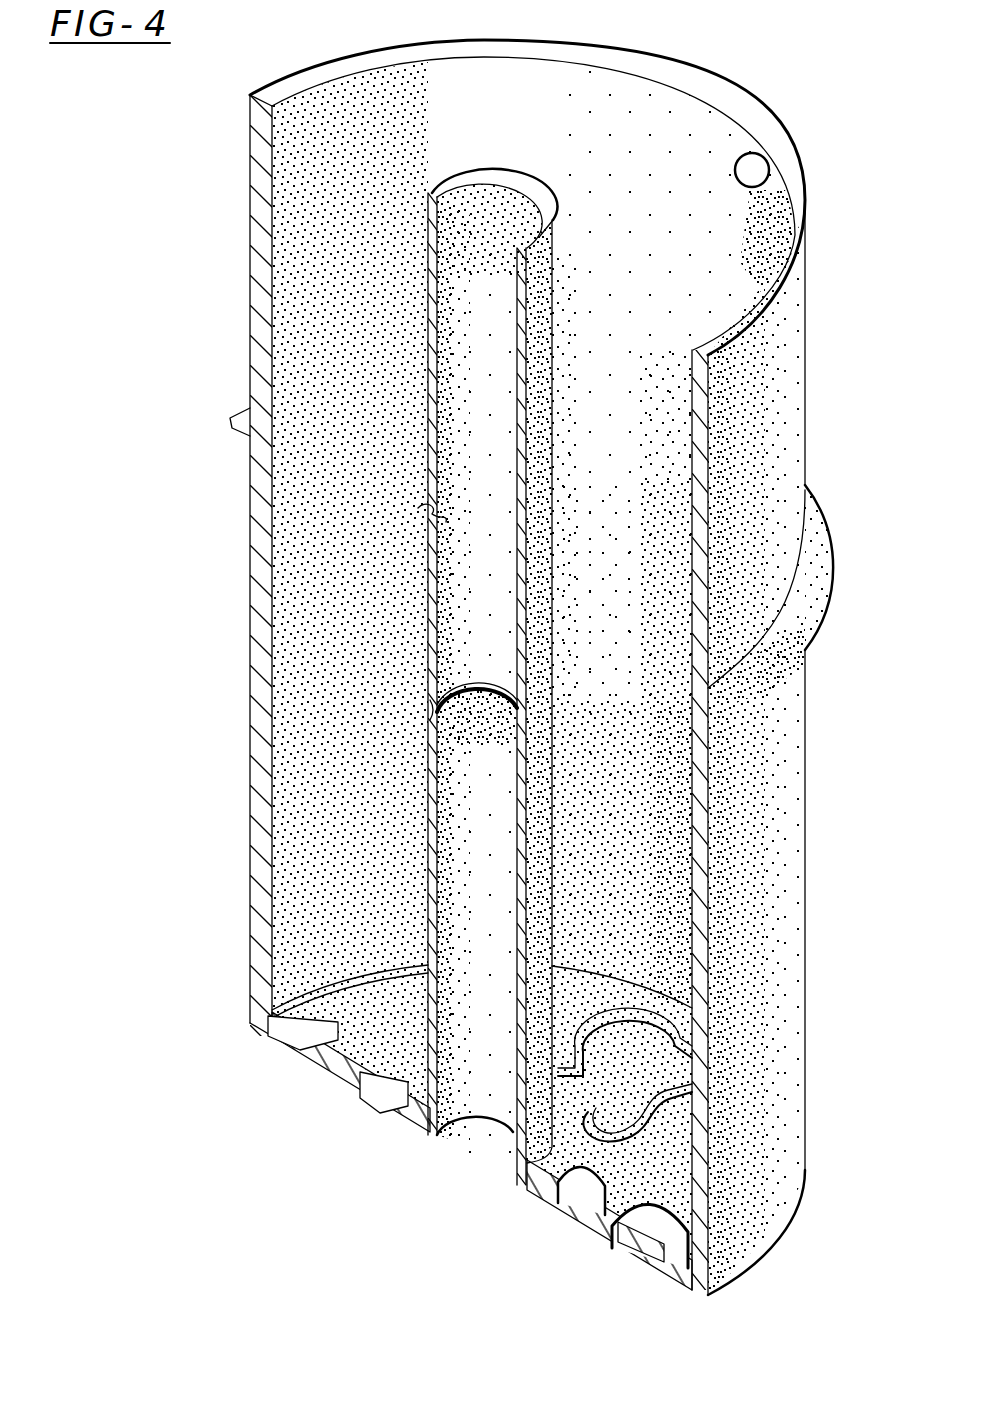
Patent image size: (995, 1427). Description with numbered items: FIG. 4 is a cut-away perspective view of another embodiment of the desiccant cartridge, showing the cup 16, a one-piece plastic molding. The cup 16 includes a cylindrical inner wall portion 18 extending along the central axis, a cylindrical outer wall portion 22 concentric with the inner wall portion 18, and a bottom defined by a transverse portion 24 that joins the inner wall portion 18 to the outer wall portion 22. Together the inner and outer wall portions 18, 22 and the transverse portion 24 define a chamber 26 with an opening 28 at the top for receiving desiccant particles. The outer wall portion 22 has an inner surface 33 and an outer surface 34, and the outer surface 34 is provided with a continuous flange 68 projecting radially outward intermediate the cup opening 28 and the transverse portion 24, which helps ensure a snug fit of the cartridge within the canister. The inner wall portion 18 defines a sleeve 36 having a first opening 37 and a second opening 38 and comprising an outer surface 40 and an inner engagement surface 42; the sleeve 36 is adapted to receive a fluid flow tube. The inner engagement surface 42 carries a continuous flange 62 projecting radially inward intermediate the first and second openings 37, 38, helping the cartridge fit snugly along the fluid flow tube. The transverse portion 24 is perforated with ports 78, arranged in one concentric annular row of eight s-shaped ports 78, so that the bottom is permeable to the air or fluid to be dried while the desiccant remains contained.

The cup 16 is at (551, 664).
The inner wall portion 18 is at (408, 1118).
The outer wall portion 22 is at (730, 1240).
The transverse portion 24 is at (536, 1190).
The chamber 26 is at (678, 278).
The opening 28 is at (700, 108).
The inner surface 33 is at (762, 166).
The outer surface 34 is at (804, 204).
The sleeve 36 is at (492, 649).
The first opening 37 is at (496, 196).
The second opening 38 is at (489, 1154).
The outer surface 40 is at (436, 514).
The inner engagement surface 42 is at (436, 628).
The continuous flange 62 is at (428, 710).
The continuous flange 68 is at (824, 530).
The ports 78 is at (644, 1116).